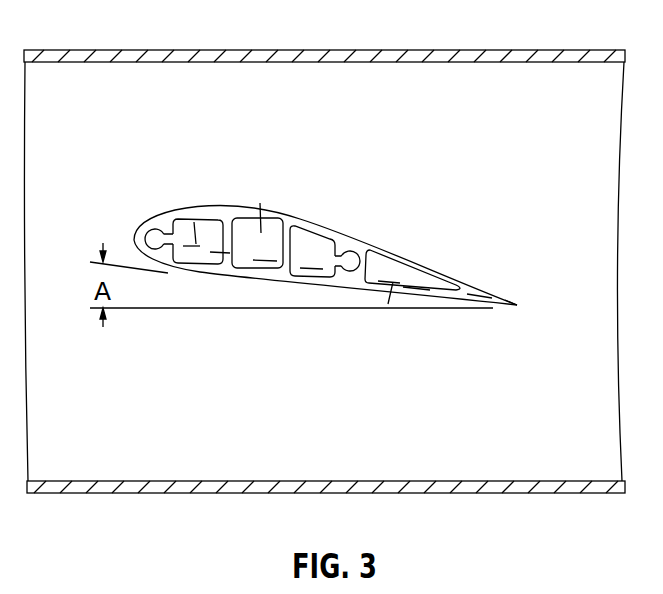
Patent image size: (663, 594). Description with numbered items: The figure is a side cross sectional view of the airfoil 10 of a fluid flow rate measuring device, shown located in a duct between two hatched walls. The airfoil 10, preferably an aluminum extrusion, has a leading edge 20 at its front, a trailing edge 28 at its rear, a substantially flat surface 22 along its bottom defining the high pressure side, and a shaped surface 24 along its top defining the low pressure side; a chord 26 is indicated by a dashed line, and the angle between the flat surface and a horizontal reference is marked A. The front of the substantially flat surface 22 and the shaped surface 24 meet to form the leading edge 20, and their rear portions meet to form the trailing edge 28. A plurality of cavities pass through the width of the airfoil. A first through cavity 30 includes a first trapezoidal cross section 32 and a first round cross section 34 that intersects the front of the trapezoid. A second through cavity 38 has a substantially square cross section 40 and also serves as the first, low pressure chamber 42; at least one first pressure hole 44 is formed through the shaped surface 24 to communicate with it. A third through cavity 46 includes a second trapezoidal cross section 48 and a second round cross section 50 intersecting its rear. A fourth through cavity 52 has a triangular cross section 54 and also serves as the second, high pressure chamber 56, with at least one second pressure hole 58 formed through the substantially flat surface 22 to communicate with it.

The airfoil 10 is at (484, 183).
The leading edge 20 is at (307, 240).
The substantially flat surface 22 is at (263, 281).
The shaped surface 24 is at (322, 222).
The chord 26 is at (198, 214).
The trailing edge 28 is at (517, 305).
The first through cavity 30 is at (213, 256).
The first trapezoidal cross section 32 is at (191, 268).
The first round cross section 34 is at (155, 218).
The second through cavity 38 is at (296, 327).
The first pressure chamber 42 is at (240, 263).
The substantially square cross section 40 is at (287, 216).
The first pressure hole 44 is at (262, 204).
The third through cavity 46 is at (325, 243).
The second trapezoidal cross section 48 is at (342, 274).
The second round cross section 50 is at (368, 296).
The fourth through cavity 52 is at (492, 259).
The second pressure chamber 56 is at (418, 275).
The triangular cross section 54 is at (425, 293).
The second pressure hole 58 is at (390, 293).